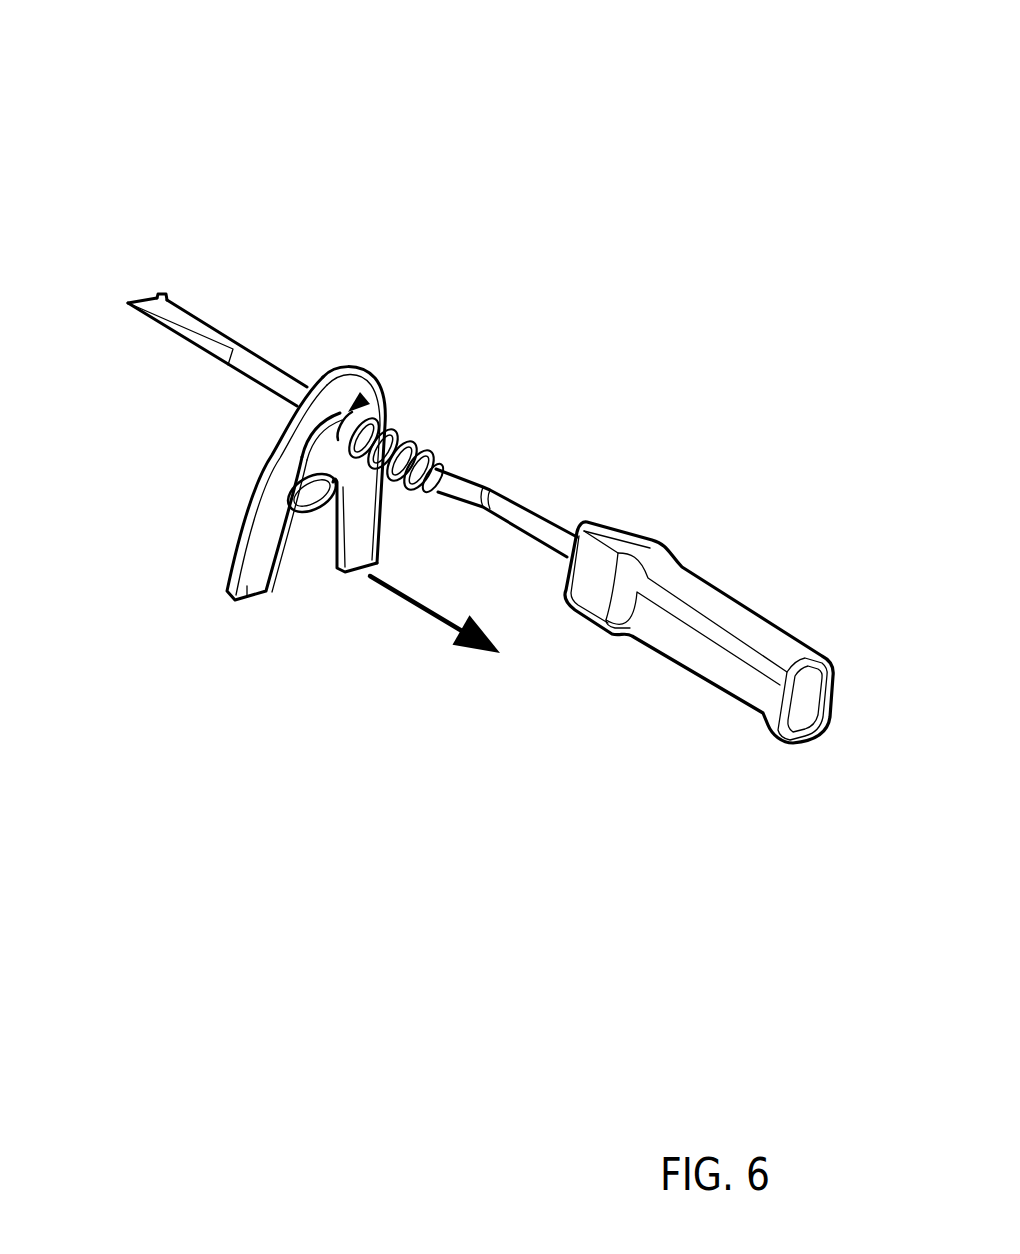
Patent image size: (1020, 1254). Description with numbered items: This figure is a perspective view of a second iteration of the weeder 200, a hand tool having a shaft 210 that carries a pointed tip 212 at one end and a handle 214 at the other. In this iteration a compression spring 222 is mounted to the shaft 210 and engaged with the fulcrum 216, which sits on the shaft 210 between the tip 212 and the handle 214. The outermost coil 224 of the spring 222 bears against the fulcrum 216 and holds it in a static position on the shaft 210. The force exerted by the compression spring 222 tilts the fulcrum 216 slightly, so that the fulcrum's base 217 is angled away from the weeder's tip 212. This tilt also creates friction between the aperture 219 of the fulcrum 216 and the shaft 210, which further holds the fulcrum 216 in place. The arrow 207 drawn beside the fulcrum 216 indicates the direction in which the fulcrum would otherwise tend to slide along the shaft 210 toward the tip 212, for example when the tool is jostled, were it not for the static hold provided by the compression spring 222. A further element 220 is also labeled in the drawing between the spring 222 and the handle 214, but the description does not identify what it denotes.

The weeder 200 is at (482, 44).
The arrow 207 is at (422, 605).
The shaft 210 is at (267, 385).
The tip 212 is at (175, 308).
The handle 214 is at (730, 622).
The fulcrum 216 is at (298, 453).
The base 217 is at (247, 588).
The aperture 219 is at (366, 399).
The shaft 220 is at (478, 492).
The compression spring 222 is at (405, 438).
The outermost coil 224 is at (303, 514).